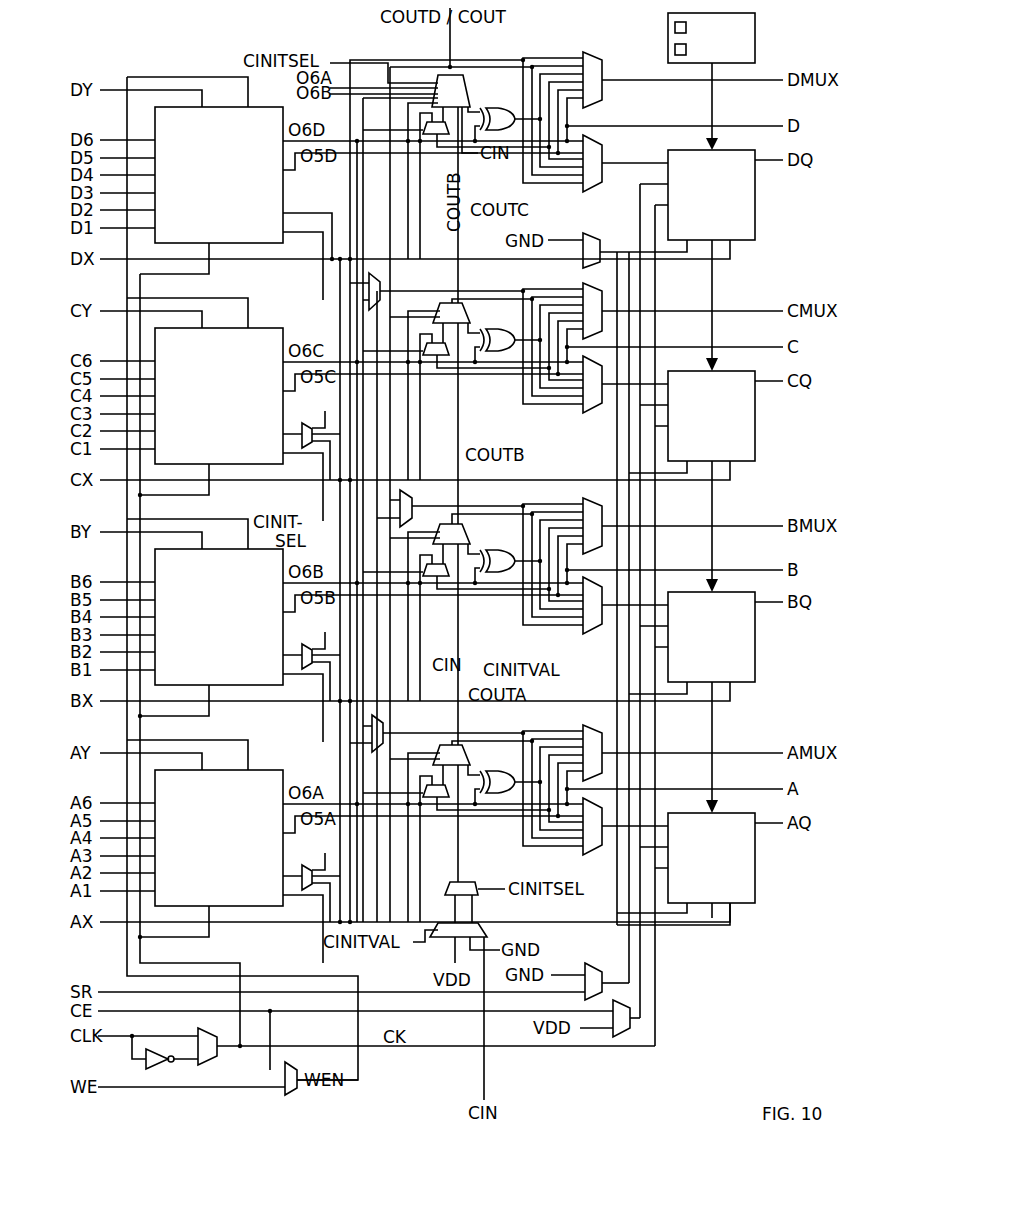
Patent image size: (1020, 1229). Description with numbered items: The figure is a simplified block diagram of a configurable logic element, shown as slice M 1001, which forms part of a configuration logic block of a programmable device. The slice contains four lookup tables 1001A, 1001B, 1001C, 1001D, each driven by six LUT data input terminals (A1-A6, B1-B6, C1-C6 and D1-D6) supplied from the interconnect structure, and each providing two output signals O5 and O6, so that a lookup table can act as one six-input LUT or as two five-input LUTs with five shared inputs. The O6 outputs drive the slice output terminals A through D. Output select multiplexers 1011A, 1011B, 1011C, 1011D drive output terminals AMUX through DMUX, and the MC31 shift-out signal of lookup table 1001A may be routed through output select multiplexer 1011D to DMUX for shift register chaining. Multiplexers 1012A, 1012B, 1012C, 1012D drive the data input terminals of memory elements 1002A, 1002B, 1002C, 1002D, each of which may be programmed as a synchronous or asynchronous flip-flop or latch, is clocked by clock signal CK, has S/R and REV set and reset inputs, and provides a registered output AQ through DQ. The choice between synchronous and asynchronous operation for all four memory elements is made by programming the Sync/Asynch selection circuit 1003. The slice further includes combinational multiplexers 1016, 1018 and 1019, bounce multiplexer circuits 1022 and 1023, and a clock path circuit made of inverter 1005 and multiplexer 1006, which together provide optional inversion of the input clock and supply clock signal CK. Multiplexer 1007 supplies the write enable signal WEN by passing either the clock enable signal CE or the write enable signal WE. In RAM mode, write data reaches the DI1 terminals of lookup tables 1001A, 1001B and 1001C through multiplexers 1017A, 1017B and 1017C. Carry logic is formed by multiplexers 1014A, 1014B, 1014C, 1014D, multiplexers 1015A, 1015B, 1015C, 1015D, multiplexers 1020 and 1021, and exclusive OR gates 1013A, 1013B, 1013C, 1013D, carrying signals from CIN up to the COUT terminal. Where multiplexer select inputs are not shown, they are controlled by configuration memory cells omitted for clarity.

The slice M 1001 is at (182, 56).
The lookup table LUTM 1001D is at (191, 175).
The lookup table LUTM 1001C is at (191, 396).
The lookup table LUTM 1001B is at (191, 617).
The lookup table LUTM 1001A is at (191, 838).
The memory element 1002D is at (691, 260).
The memory element 1002C is at (706, 481).
The memory element 1002B is at (706, 702).
The memory element 1002A is at (700, 869).
The Sync/Asynch selection circuit 1003 is at (668, 52).
The inverter 1005 is at (150, 1070).
The multiplexer 1006 is at (216, 1058).
The multiplexer 1007 is at (289, 1096).
The output select multiplexer 1011D is at (603, 92).
The output select multiplexer 1011C is at (652, 297).
The output select multiplexer 1011B is at (652, 513).
The output select multiplexer 1011A is at (652, 739).
The multiplexer 1012D is at (602, 158).
The multiplexer 1012C is at (594, 391).
The multiplexer 1012B is at (594, 612).
The multiplexer 1012A is at (594, 833).
The exclusive OR gate 1013D is at (496, 108).
The exclusive OR gate 1013C is at (504, 333).
The exclusive OR gate 1013B is at (504, 554).
The exclusive OR gate 1013A is at (504, 775).
The carry logic multiplexer 1014D is at (464, 76).
The carry logic multiplexer 1014C is at (461, 391).
The carry logic multiplexer 1014B is at (461, 612).
The carry logic multiplexer 1014A is at (461, 811).
The carry logic multiplexer 1015D is at (430, 135).
The carry logic multiplexer 1015C is at (456, 407).
The carry logic multiplexer 1015B is at (456, 628).
The carry logic multiplexer 1015A is at (456, 849).
The combinational multiplexer 1016 is at (436, 271).
The multiplexer 1017C is at (286, 457).
The multiplexer 1017B is at (286, 678).
The multiplexer 1017A is at (286, 899).
The combinational multiplexer 1018 is at (433, 504).
The combinational multiplexer 1019 is at (436, 747).
The carry logic multiplexer 1020 is at (478, 926).
The carry logic multiplexer 1021 is at (586, 235).
The bounce multiplexer circuit 1022 is at (586, 966).
The bounce multiplexer circuit 1023 is at (618, 1038).